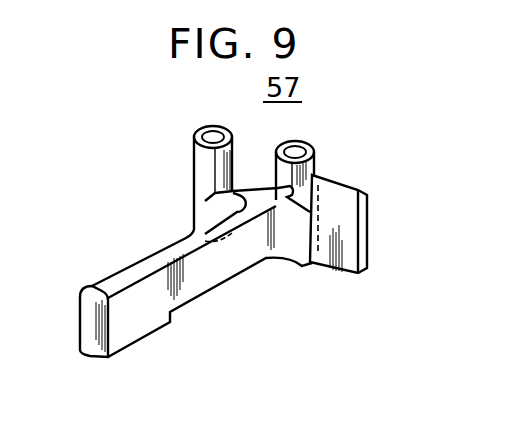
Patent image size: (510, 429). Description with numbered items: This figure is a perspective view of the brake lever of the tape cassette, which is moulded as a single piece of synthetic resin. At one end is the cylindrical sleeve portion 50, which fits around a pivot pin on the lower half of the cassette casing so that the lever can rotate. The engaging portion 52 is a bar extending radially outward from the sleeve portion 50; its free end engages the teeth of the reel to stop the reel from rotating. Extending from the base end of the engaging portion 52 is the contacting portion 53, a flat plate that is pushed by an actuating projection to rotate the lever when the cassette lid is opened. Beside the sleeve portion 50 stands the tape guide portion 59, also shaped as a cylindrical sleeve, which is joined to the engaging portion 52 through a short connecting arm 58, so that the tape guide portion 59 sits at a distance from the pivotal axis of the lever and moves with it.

The engaging portion 52 is at (148, 318).
The connecting arm 58 is at (222, 202).
The tape guide portion 59 is at (197, 150).
The cylindrical sleeve portion 50 is at (312, 146).
The contacting portion 53 is at (352, 235).